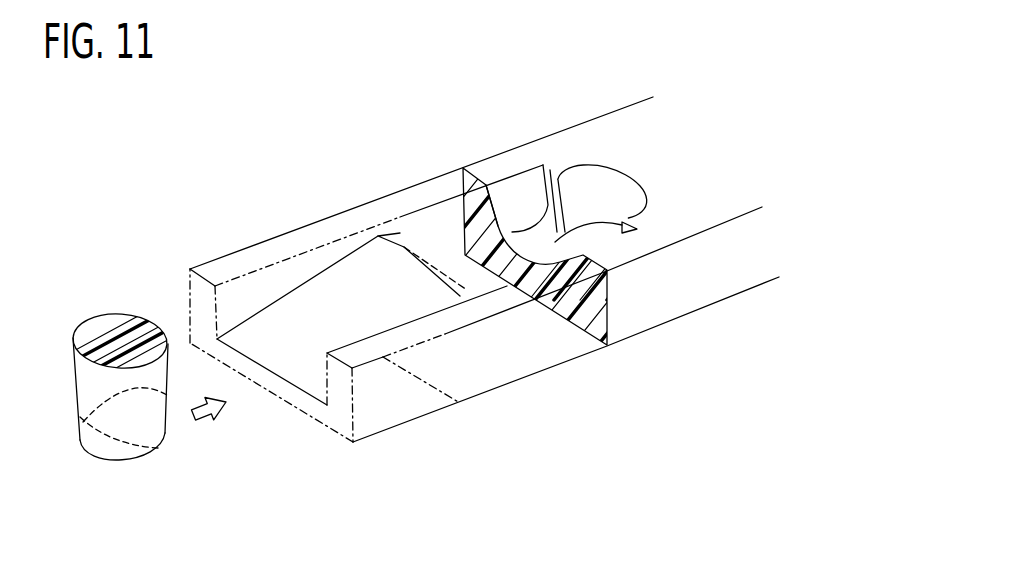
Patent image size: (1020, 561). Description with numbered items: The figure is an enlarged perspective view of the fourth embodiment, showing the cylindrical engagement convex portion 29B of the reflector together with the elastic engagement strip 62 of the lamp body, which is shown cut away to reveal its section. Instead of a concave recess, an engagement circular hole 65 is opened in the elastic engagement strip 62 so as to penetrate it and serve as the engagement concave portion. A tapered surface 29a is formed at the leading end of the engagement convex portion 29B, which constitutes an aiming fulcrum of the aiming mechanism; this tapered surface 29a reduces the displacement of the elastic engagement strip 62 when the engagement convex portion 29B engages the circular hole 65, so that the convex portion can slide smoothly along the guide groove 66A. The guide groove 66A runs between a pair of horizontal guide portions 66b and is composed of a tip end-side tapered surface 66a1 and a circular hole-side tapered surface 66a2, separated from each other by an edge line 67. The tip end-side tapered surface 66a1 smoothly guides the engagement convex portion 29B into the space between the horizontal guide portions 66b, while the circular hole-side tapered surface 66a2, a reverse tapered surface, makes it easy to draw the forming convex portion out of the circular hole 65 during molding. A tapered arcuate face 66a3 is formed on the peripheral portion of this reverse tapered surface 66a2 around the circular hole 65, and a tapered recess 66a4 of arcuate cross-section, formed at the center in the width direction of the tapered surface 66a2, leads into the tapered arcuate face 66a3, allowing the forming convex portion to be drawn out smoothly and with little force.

The elastic engagement strip 62 is at (519, 381).
The guide groove 66A is at (313, 303).
The horizontal guide portions 66b is at (253, 257).
The tip end-side tapered surface 66a1 is at (343, 313).
The circular hole-side tapered surface 66a2 is at (437, 243).
The tapered arcuate face 66a3 is at (553, 227).
The tapered recess 66a4 is at (522, 228).
The edge line 67 is at (400, 244).
The engagement circular hole 65 is at (599, 232).
The cylindrical engagement convex portion 29B is at (76, 417).
The tapered surface 29a is at (172, 425).